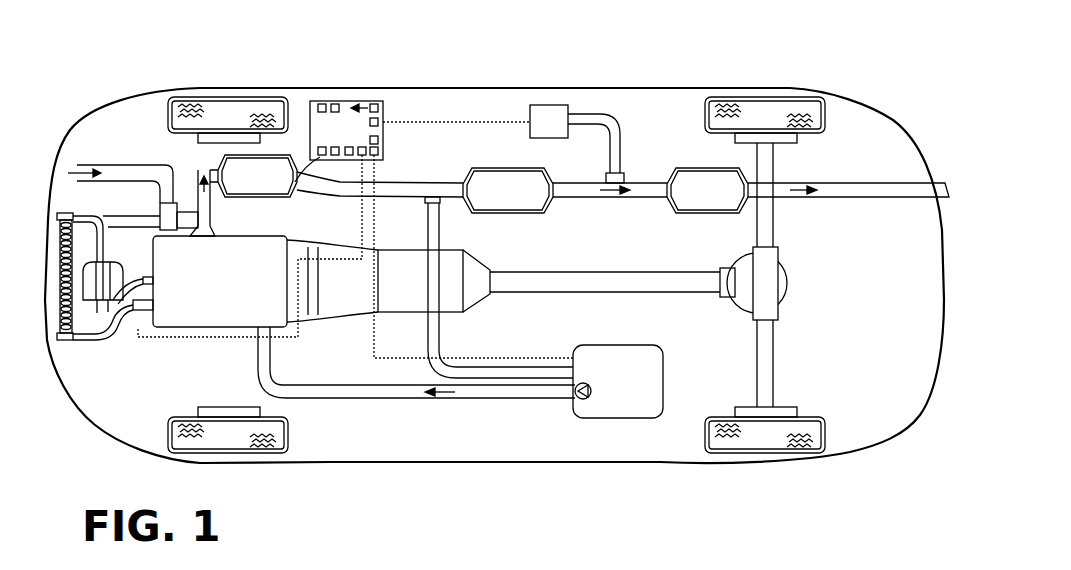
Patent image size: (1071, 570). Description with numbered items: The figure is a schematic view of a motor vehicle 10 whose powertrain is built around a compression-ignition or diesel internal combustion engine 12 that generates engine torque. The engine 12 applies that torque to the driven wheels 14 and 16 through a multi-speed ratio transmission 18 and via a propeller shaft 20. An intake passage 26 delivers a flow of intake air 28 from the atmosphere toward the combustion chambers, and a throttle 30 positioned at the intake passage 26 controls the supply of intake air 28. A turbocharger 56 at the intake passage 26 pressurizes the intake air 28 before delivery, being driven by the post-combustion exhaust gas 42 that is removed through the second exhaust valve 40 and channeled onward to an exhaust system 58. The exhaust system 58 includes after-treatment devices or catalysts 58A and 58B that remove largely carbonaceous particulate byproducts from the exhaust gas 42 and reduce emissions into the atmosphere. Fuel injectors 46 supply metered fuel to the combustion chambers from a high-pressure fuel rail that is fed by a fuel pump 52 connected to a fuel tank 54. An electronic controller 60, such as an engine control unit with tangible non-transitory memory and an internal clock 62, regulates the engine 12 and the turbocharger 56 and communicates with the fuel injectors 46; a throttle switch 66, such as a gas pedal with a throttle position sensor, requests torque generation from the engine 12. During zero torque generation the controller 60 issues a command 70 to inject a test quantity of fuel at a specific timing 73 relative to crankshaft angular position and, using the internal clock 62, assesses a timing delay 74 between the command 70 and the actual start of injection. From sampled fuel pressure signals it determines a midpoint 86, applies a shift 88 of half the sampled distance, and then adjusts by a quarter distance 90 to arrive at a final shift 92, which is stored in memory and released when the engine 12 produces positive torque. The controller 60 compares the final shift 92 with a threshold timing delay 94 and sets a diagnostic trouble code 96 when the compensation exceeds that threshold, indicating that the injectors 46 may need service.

The motor vehicle 10 is at (510, 495).
The internal combustion engine 12 is at (208, 297).
The driven wheels 14 is at (763, 107).
The driven wheels 16 is at (230, 96).
The multi-speed ratio transmission 18 is at (389, 293).
The propeller shaft 20 is at (576, 286).
The intake passage 26 is at (107, 167).
The intake air 28 is at (77, 167).
The throttle 30 is at (132, 318).
The second exhaust valve 40 is at (793, 196).
The exhaust gas 42 is at (198, 205).
The fuel injectors 46 is at (437, 398).
The fuel pump 52 is at (143, 201).
The fuel tank 54 is at (668, 385).
The turbocharger 56 is at (592, 398).
The exhaust system 58 is at (442, 182).
The after-treatment device 58A is at (242, 189).
The after-treatment device 58B is at (492, 201).
The electronic controller 60 is at (335, 134).
The internal clock 62 is at (372, 103).
The throttle switch 66 is at (137, 321).
The command 70 is at (380, 121).
The specific timing 73 is at (384, 138).
The timing delay 74 is at (384, 151).
The midpoint 86 is at (364, 158).
The shift 88 is at (347, 158).
The distance 90 is at (315, 148).
The final shift 92 is at (310, 108).
The threshold timing delay 94 is at (322, 103).
The diagnostic trouble code 96 is at (334, 103).